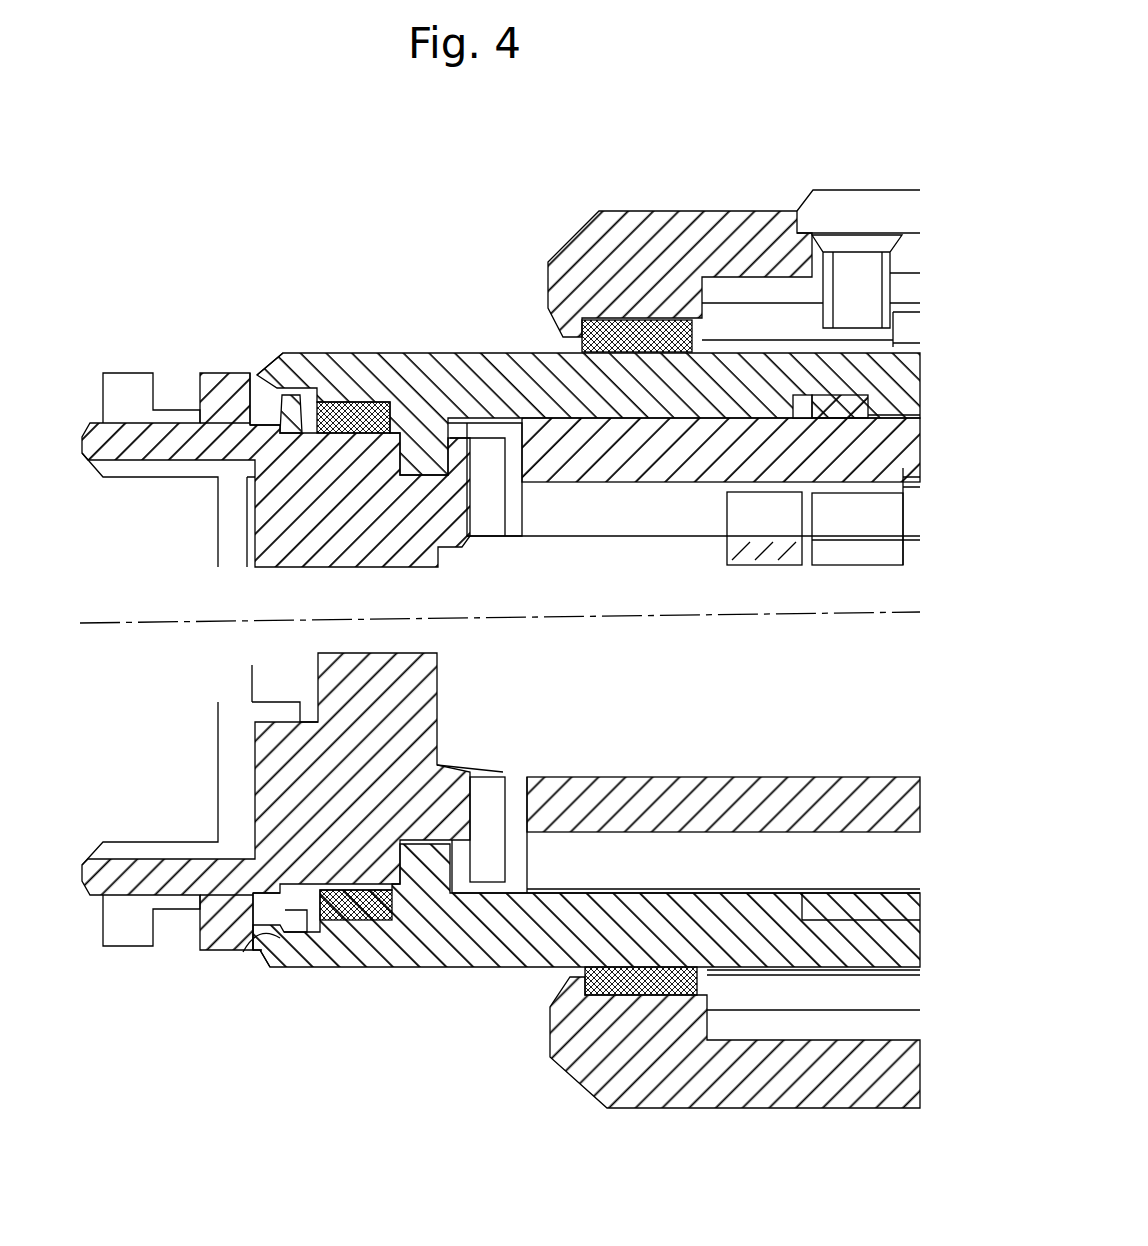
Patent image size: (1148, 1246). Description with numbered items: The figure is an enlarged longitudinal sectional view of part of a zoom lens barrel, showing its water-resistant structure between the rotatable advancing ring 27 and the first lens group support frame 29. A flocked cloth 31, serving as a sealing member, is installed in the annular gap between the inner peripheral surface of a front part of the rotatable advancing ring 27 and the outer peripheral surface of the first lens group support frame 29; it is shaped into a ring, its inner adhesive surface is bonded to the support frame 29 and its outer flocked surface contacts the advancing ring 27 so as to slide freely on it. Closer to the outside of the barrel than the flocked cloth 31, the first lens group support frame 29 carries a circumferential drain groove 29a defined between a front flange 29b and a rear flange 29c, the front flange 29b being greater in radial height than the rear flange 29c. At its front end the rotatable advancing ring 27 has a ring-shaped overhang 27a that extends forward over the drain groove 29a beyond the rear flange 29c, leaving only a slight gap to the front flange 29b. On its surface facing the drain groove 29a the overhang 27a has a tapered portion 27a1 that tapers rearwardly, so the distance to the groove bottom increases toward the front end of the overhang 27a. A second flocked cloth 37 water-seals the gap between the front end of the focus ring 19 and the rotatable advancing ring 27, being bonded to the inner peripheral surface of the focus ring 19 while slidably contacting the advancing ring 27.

The focus ring 19 is at (660, 240).
The rotatable advancing ring 27 is at (463, 365).
The overhang 27a is at (262, 366).
The tapered portion 27a1 is at (266, 905).
The first lens group support frame 29 is at (270, 530).
The drain groove 29a is at (265, 407).
The front flange 29b is at (213, 378).
The rear flange 29c is at (290, 404).
The flocked cloth 31 is at (363, 403).
The flocked cloth 37 is at (606, 322).